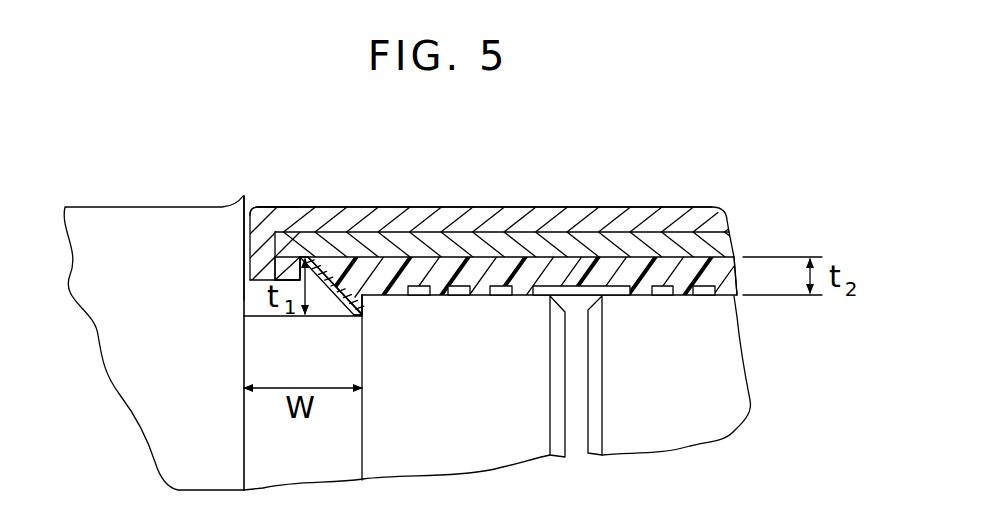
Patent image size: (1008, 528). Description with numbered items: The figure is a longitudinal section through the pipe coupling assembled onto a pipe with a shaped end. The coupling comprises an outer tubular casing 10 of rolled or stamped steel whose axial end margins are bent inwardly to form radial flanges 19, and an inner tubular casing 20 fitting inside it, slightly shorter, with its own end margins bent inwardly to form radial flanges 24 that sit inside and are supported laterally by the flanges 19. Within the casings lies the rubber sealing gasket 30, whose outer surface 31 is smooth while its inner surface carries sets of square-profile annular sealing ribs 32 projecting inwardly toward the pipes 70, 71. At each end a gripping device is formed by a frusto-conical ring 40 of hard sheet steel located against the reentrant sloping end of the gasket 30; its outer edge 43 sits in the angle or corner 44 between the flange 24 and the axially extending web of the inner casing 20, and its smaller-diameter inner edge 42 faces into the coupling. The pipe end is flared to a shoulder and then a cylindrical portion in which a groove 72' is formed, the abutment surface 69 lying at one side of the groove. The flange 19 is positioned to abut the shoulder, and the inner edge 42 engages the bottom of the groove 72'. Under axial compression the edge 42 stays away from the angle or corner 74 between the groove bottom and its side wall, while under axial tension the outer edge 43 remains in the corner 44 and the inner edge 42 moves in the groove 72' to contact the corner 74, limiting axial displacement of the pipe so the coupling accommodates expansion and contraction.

The outer tubular casing 10 is at (523, 212).
The radial flanges 19 is at (251, 245).
The inner tubular casing 20 is at (585, 240).
The radial flanges 24 is at (274, 270).
The sealing gasket 30 is at (728, 282).
The outer surface 31 is at (448, 245).
The annular sealing ribs 32 is at (452, 296).
The frusto-conical ring 40 is at (312, 317).
The inner edge 42 is at (358, 318).
The outer edge 43 is at (316, 257).
The angle or corner 44 is at (300, 267).
The abutment surface 69 is at (363, 298).
The pipe 70 is at (653, 400).
The pipe 71 is at (490, 423).
The groove 72' is at (321, 312).
The angle or corner 74 is at (364, 299).